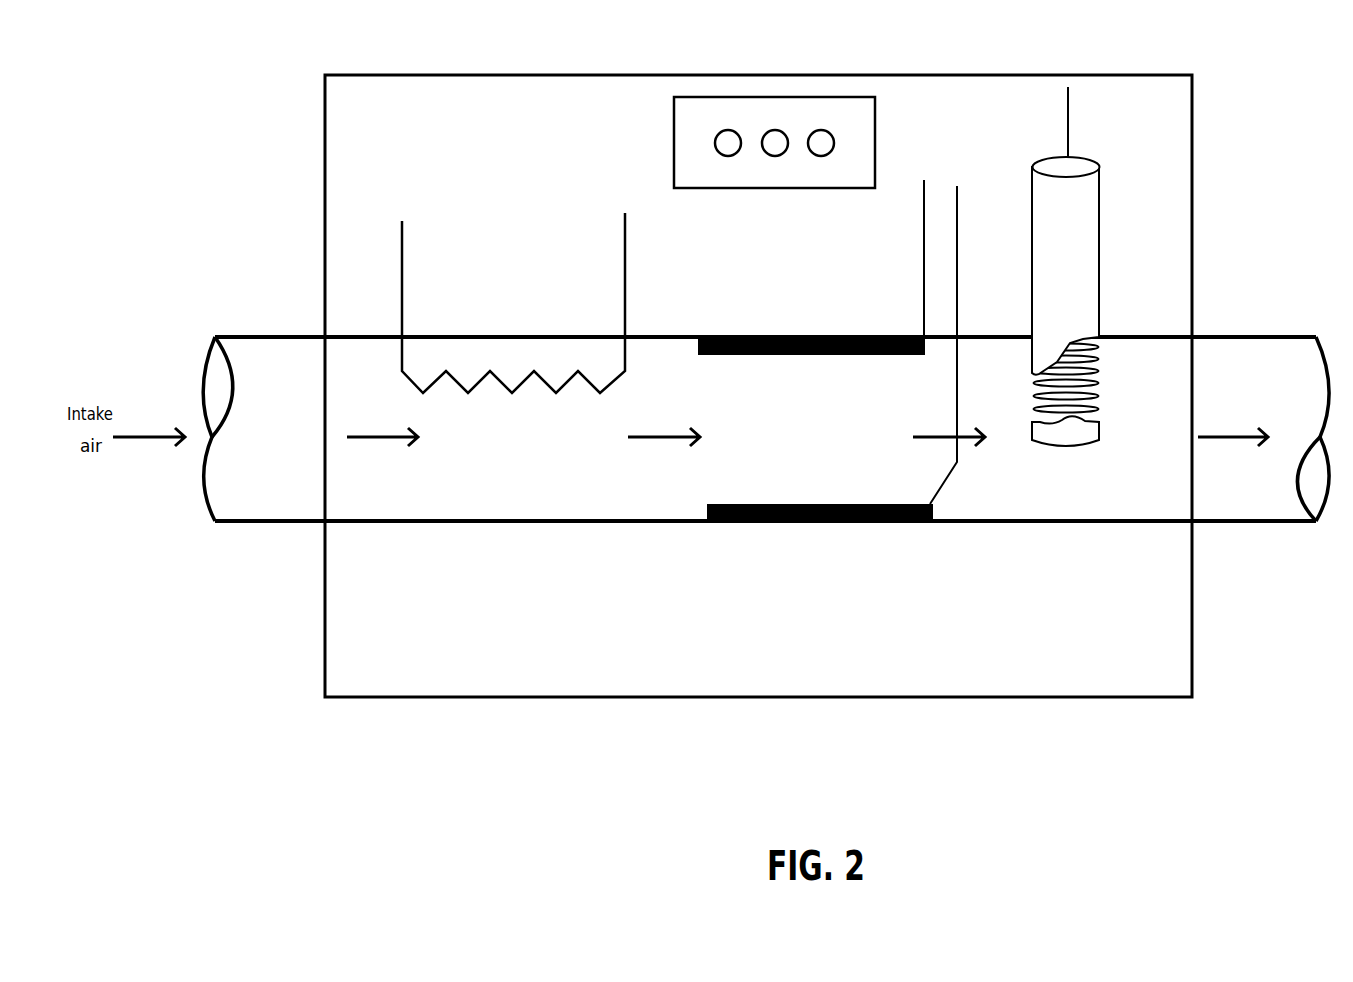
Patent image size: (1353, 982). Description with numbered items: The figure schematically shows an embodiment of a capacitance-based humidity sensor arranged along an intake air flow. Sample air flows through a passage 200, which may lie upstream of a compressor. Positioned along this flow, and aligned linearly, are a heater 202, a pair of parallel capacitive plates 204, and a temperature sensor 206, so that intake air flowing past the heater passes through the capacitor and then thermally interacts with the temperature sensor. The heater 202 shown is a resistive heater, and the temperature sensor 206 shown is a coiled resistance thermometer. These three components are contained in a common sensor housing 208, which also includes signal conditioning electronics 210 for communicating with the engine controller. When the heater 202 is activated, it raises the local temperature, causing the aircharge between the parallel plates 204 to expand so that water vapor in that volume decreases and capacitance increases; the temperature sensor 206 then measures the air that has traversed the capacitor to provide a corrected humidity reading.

The passage 200 is at (291, 324).
The heater 202 is at (657, 268).
The pair of parallel capacitive plates 204 is at (940, 346).
The temperature sensor 206 is at (1115, 235).
The sensor housing 208 is at (1206, 128).
The signal conditioning electronics 210 is at (894, 145).